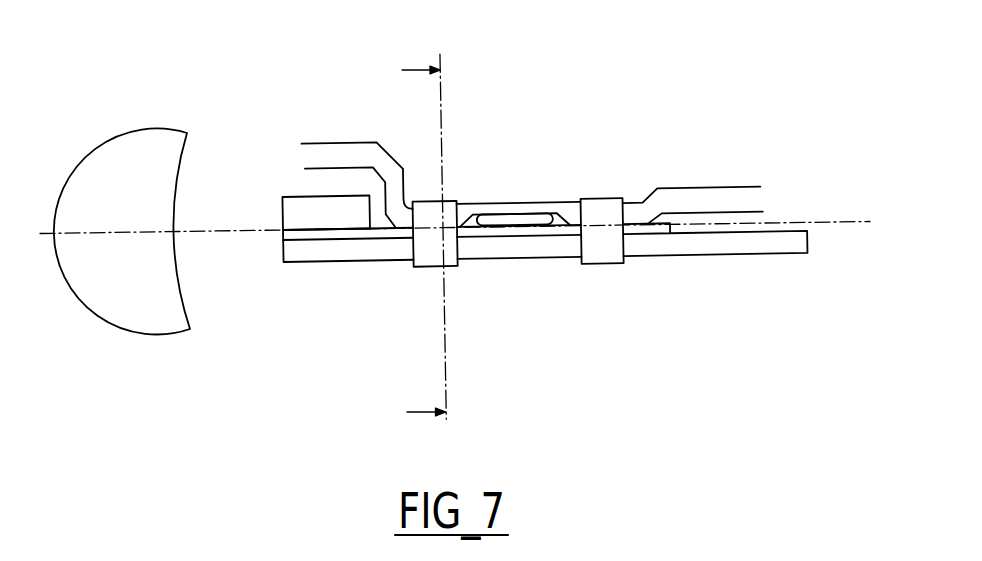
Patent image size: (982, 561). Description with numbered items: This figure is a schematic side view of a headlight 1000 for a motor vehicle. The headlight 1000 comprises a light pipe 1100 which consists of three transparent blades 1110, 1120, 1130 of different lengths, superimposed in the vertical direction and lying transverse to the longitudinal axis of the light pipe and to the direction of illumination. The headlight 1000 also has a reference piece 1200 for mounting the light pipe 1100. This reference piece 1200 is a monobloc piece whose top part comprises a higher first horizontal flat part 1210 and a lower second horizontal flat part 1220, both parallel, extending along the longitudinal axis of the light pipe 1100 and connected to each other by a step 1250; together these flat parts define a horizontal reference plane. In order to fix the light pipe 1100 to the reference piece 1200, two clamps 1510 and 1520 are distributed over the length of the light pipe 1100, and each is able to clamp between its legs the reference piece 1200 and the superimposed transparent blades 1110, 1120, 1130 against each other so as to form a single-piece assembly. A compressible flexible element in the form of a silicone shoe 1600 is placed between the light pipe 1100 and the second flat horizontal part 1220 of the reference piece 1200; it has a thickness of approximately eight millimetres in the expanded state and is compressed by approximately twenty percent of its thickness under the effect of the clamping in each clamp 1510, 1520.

The headlight 1000 is at (226, 100).
The light pipe 1100 is at (279, 237).
The transparent blade 1110 is at (288, 210).
The transparent blade 1120 is at (317, 241).
The transparent blade 1130 is at (517, 258).
The reference piece 1200 is at (716, 198).
The first horizontal flat part 1210 is at (323, 157).
The second horizontal flat part 1220 is at (522, 205).
The step 1250 is at (395, 185).
The clamp 1510 is at (450, 212).
The clamp 1520 is at (609, 199).
The silicone shoe 1600 is at (546, 211).